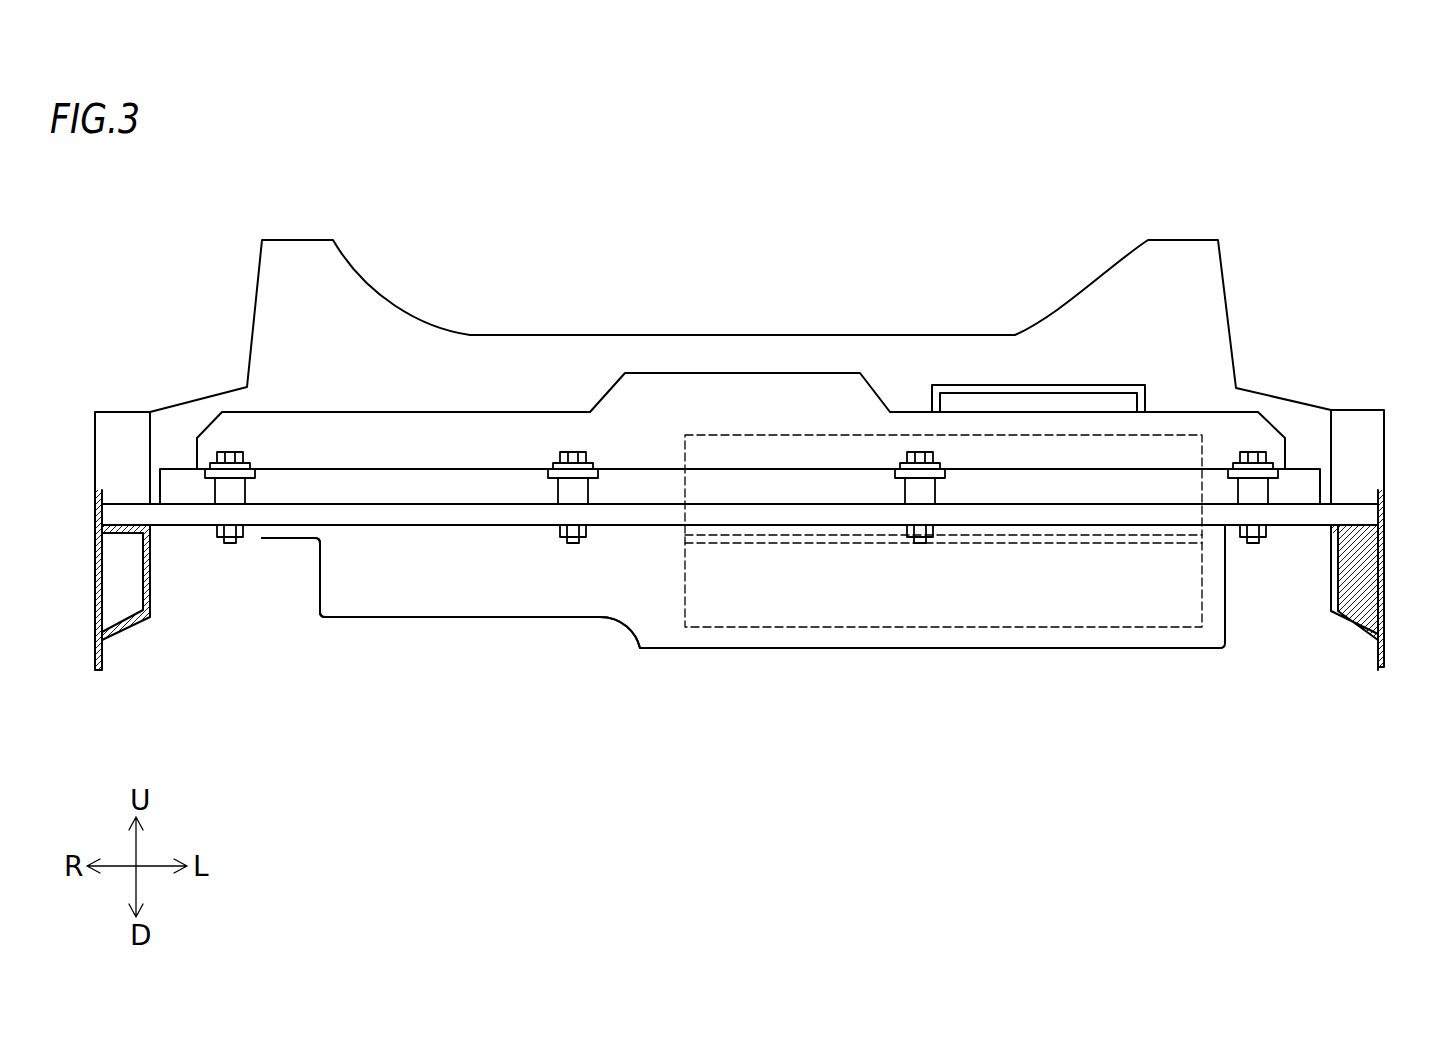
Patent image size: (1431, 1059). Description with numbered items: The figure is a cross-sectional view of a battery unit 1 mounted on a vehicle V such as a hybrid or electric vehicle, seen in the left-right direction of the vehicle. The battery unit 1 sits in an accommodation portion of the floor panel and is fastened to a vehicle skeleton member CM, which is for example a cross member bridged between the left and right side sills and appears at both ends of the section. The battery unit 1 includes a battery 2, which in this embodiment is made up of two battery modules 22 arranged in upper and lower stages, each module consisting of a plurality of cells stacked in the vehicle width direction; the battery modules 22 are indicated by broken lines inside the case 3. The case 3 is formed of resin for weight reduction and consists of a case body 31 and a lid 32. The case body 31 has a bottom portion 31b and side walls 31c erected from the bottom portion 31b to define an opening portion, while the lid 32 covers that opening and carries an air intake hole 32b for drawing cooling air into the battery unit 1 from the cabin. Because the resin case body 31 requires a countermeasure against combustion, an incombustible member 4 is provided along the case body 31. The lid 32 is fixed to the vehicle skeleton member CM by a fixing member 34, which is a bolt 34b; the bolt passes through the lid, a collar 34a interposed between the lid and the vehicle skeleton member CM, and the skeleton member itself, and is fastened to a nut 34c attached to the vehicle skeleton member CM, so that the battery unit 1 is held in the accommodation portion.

The battery unit 1 is at (741, 362).
The case 3 is at (531, 403).
The battery 2 is at (1383, 244).
The battery module 22 is at (1203, 451).
The incombustible member 4 is at (520, 587).
The case body 31 is at (740, 616).
The bottom portion 31b is at (776, 650).
The side wall 31c is at (377, 587).
The lid 32 is at (760, 373).
The air intake hole 32b is at (1085, 403).
The fixing member 34 is at (741, 361).
The bolt 34b is at (921, 452).
The collar 34a is at (233, 492).
The nut 34c is at (230, 543).
The vehicle skeleton member CM is at (125, 503).
The vehicle V is at (1162, 167).